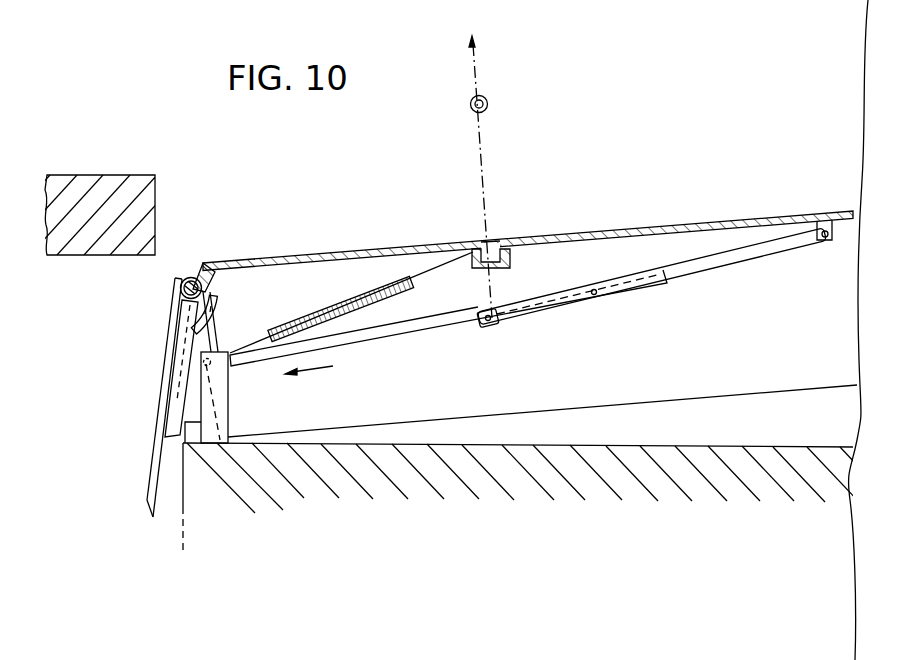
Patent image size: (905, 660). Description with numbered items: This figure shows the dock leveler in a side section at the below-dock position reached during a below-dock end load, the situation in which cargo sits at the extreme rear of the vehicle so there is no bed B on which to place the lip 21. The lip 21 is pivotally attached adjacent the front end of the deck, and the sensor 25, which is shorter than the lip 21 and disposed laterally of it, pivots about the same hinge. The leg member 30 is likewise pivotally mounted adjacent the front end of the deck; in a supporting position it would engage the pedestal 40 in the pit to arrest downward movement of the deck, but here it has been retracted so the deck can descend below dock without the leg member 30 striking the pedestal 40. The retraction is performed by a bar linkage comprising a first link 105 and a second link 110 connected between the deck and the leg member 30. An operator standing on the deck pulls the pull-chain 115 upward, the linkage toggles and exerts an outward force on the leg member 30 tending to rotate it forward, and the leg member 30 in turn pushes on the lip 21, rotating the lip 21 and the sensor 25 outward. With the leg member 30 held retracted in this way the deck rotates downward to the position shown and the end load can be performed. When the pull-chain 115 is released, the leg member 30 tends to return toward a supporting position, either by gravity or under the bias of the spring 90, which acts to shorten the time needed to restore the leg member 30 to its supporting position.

The bed B is at (70, 176).
The lip 21 is at (148, 488).
The sensor 25 is at (160, 403).
The leg member 30 is at (170, 420).
The pedestal 40 is at (228, 397).
The spring 90 is at (330, 282).
The first link 105 is at (722, 258).
The second link 110 is at (407, 330).
The pull-chain 115 is at (488, 104).